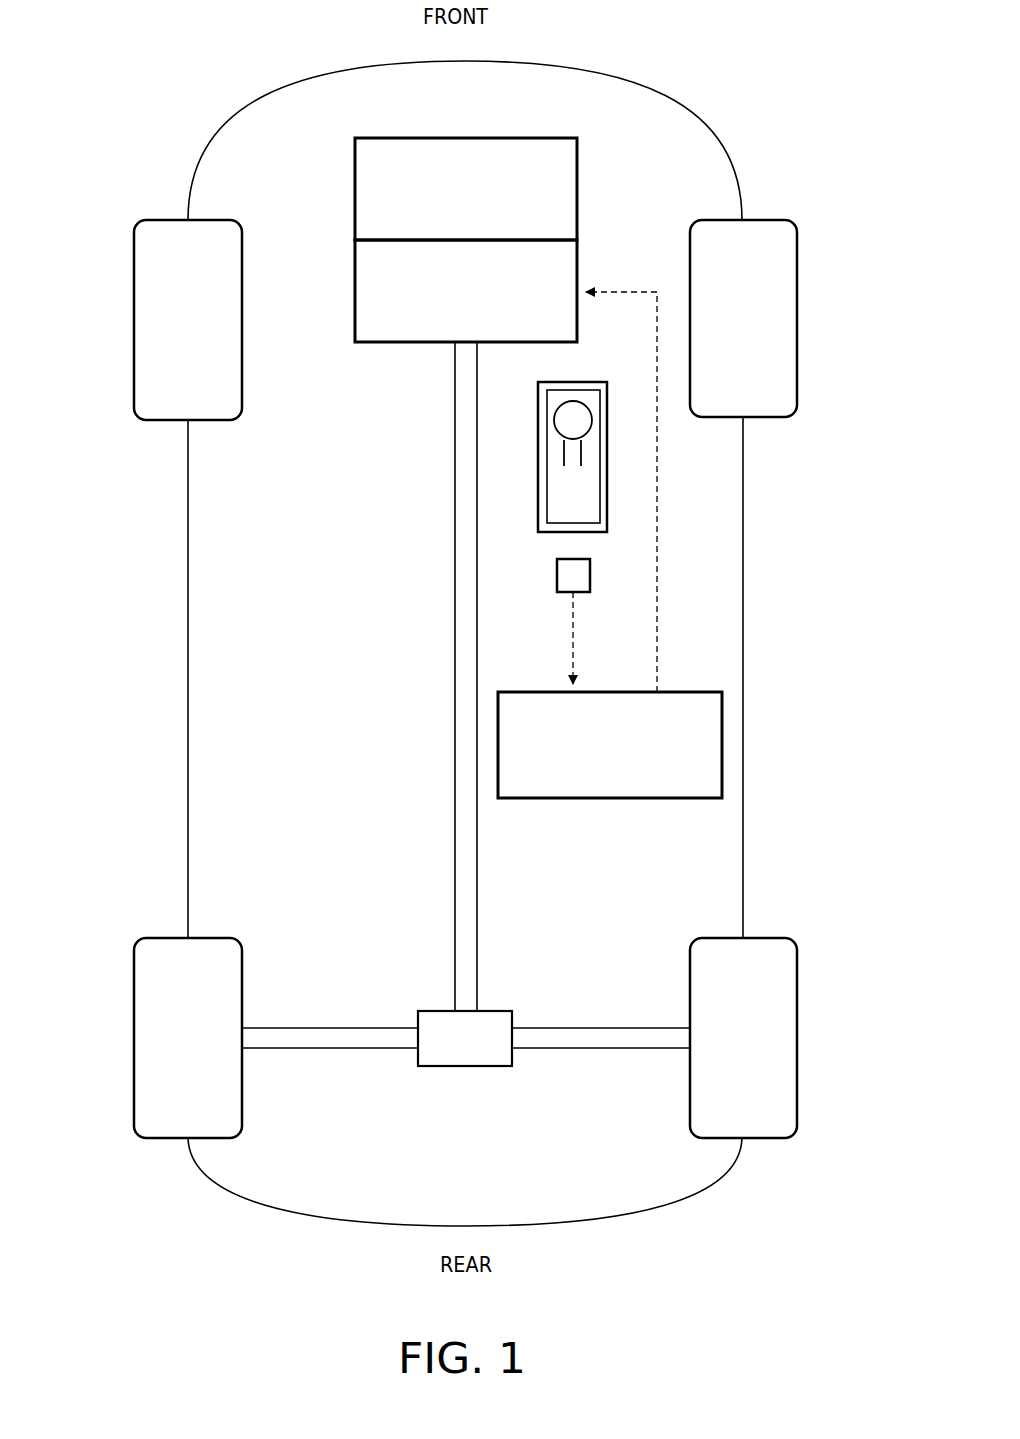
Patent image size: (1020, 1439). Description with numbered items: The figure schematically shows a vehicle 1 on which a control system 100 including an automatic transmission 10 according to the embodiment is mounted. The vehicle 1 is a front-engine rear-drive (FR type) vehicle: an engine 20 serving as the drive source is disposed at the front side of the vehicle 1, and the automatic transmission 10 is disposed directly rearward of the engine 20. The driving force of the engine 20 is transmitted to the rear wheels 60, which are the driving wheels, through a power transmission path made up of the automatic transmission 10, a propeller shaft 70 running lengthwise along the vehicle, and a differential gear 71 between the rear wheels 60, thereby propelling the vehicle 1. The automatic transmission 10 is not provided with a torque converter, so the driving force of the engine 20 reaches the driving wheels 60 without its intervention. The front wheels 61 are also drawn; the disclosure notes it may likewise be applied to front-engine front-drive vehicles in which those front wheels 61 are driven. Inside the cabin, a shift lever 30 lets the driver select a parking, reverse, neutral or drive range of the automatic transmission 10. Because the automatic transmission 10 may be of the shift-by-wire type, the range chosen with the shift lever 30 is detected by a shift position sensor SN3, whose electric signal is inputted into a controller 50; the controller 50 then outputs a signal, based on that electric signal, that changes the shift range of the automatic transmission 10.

The vehicle 1 is at (741, 95).
The control system 100 is at (838, 480).
The automatic transmission 10 is at (355, 291).
The engine 20 is at (355, 190).
The shift lever 30 is at (608, 477).
The shift position sensor SN3 is at (590, 572).
The controller 50 is at (612, 798).
The rear wheels 60 is at (134, 1039).
The front wheels 61 is at (134, 327).
The propeller shaft 70 is at (455, 694).
The differential gear 71 is at (468, 1066).